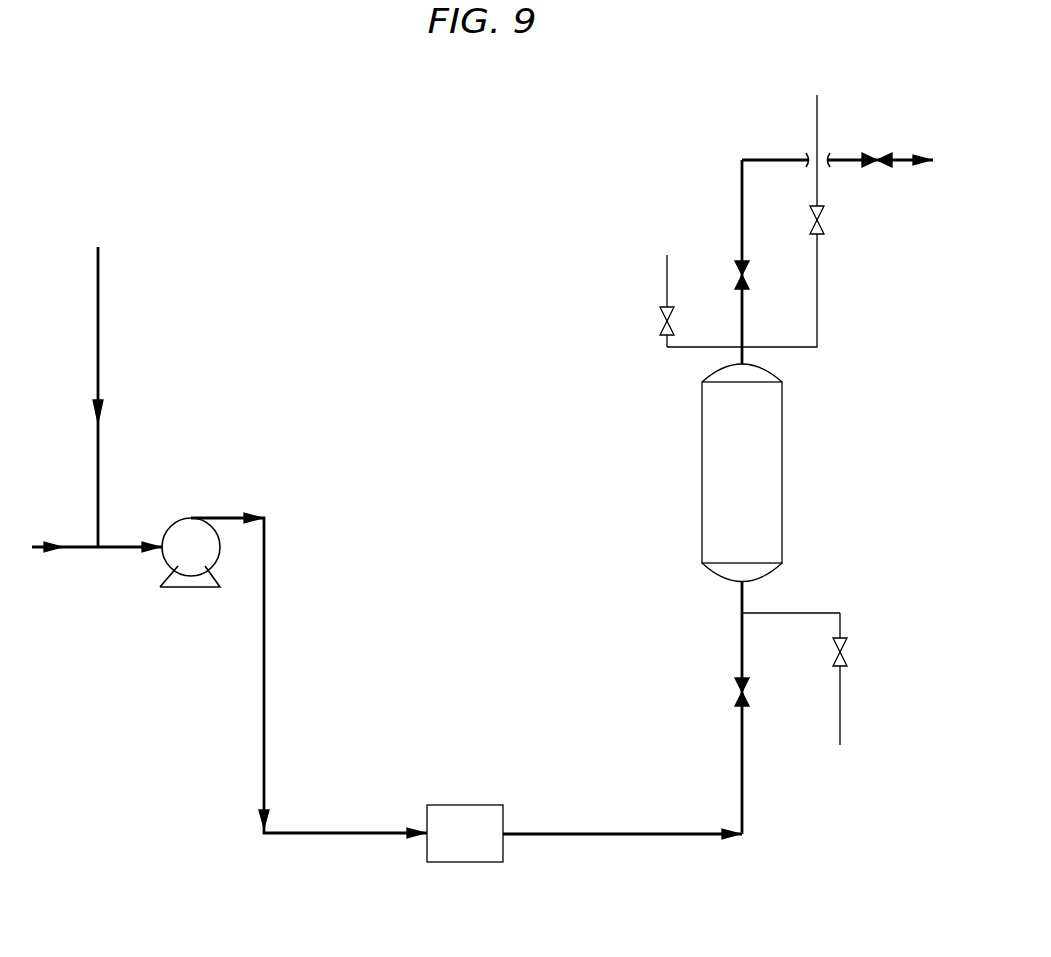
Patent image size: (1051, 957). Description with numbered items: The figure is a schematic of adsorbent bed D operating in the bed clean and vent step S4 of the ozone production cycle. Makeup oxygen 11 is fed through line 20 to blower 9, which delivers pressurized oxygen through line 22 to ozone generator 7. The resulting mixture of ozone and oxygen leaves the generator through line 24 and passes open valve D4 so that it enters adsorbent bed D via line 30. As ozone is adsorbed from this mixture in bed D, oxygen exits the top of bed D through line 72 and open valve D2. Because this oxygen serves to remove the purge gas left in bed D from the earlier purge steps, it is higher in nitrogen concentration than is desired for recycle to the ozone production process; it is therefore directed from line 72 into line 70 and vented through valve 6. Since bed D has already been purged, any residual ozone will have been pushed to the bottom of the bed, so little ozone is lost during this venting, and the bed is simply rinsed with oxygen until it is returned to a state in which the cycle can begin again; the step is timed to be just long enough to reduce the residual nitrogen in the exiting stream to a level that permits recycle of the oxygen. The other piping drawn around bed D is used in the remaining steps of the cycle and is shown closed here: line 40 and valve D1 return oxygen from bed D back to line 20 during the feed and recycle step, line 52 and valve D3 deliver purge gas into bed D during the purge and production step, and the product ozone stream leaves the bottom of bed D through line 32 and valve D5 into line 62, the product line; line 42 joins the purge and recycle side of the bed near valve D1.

The line 40 is at (98, 318).
The line 20 is at (85, 540).
The makeup oxygen 11 is at (71, 586).
The blower 9 is at (176, 520).
The line 22 is at (264, 722).
The ozone generator 7 is at (447, 862).
The line 24 is at (627, 834).
The line 30 is at (742, 723).
The line 32 is at (810, 613).
The line 62 is at (846, 698).
The line 72 is at (742, 207).
The line 70 is at (776, 158).
The line 52 is at (817, 183).
The purge line 42 is at (667, 273).
The valve 6 is at (881, 155).
The adsorbent bed D is at (742, 473).
The valve D1 is at (686, 320).
The valve D2 is at (762, 275).
The valve D3 is at (837, 220).
The valve D4 is at (760, 692).
The valve D5 is at (860, 652).
The bed clean and vent step S4 is at (105, 133).